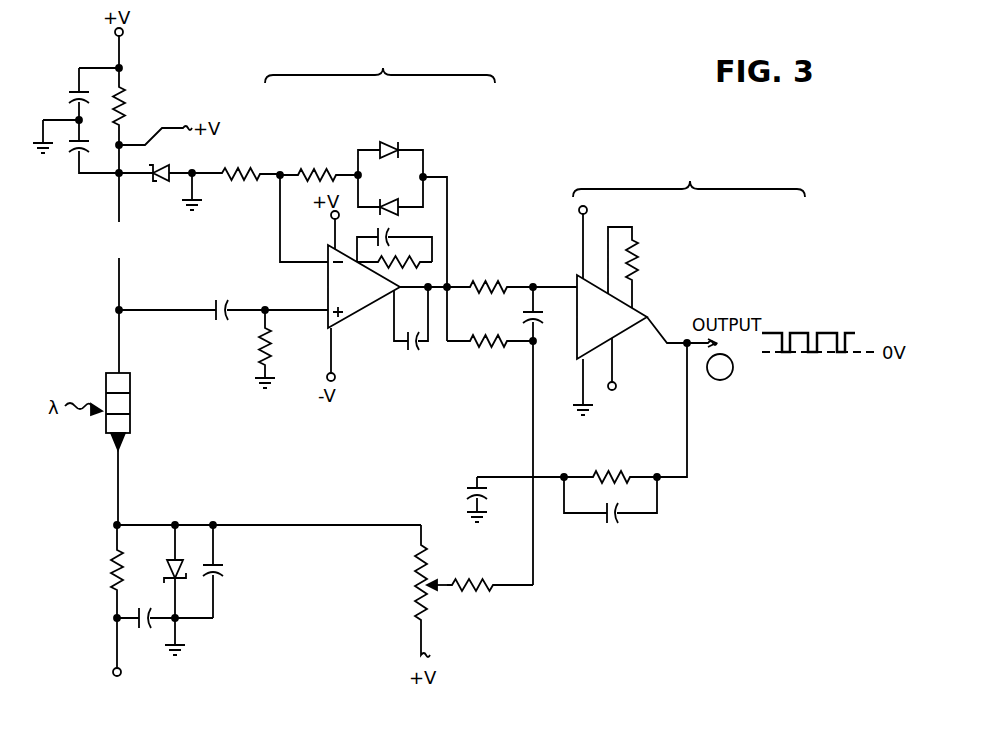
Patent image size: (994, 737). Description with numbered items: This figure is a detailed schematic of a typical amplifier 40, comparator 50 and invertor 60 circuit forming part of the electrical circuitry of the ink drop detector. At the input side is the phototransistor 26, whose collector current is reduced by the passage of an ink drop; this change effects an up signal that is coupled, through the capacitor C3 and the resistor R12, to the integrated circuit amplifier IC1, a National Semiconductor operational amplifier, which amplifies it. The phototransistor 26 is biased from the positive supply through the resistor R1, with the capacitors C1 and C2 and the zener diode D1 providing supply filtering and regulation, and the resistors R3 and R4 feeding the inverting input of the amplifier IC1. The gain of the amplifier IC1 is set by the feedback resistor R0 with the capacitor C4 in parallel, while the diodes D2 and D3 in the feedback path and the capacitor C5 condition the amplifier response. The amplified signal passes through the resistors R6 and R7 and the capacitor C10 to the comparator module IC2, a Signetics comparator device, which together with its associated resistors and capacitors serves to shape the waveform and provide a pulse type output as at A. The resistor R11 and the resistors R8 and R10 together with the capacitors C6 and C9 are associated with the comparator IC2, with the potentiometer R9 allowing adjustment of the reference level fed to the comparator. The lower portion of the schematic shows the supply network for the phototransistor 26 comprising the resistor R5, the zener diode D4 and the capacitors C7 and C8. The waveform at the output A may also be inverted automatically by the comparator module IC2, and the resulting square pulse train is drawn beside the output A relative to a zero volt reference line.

The resistor R1 is at (124, 97).
The resistor R3 is at (245, 170).
The resistor R4 is at (317, 170).
The resistor R5 is at (109, 565).
The resistor R6 is at (491, 284).
The resistor R7 is at (489, 340).
The resistor R8 is at (470, 597).
The potentiometer R9 is at (418, 588).
The resistor R10 is at (612, 470).
The resistor R11 is at (640, 268).
The resistor R12 is at (272, 347).
The resistor R0 is at (411, 269).
The capacitor C1 is at (68, 99).
The capacitor C2 is at (73, 154).
The capacitor C3 is at (224, 305).
The capacitor C4 is at (391, 233).
The capacitor C5 is at (412, 353).
The capacitor C6 is at (466, 491).
The capacitor C7 is at (144, 632).
The capacitor C8 is at (225, 571).
The capacitor C9 is at (614, 527).
The capacitor C10 is at (553, 326).
The zener diode D1 is at (163, 184).
The diode D2 is at (388, 142).
The diode D3 is at (388, 199).
The zener diode D4 is at (169, 561).
The integrated circuit amplifier IC1 is at (364, 269).
The comparator module IC2 is at (610, 310).
The phototransistor 26 is at (130, 422).
The amplifier 40 is at (436, 67).
The comparator 50 is at (775, 152).
The invertor 60 is at (775, 177).
The output A is at (720, 367).